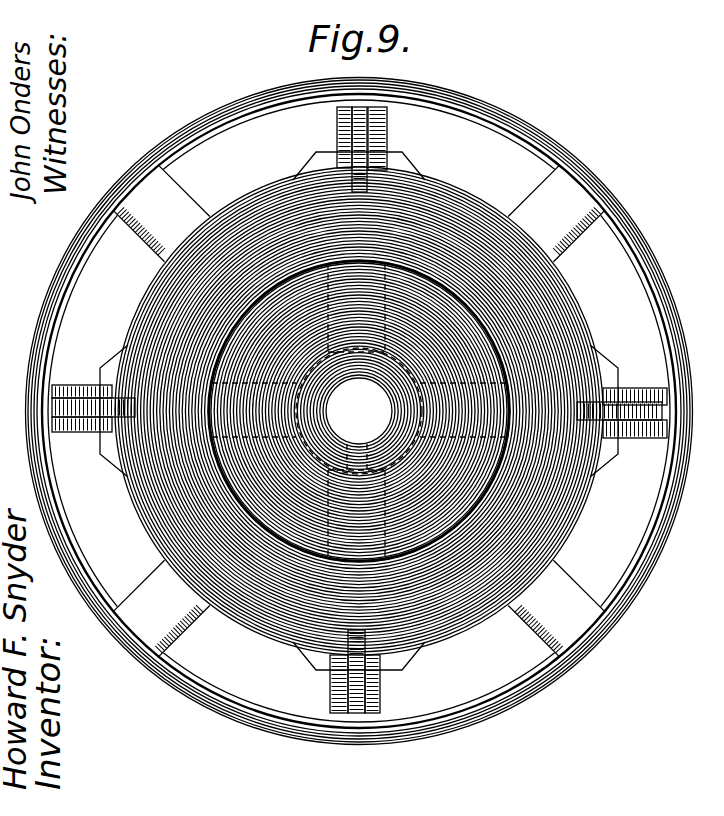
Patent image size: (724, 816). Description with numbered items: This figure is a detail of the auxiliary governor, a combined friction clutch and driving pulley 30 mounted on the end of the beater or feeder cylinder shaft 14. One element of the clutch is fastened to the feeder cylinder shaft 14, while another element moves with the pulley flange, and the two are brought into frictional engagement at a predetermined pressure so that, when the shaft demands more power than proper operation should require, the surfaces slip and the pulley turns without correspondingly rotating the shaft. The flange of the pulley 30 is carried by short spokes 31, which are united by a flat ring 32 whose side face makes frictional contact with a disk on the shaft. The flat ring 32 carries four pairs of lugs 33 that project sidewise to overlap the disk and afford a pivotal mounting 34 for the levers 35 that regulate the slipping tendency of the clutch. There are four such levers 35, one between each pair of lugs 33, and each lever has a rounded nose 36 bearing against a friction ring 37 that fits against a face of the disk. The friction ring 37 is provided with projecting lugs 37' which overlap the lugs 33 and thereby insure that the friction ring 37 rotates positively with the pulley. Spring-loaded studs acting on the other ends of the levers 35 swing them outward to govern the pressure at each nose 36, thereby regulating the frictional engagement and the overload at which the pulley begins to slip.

The feeder cylinder shaft 14 is at (359, 411).
The driving pulley 30 is at (523, 128).
The short spokes 31 is at (570, 243).
The flat ring 32 is at (462, 188).
The lugs 33 is at (330, 688).
The pivotal mounting 34 is at (386, 130).
The levers 35 is at (352, 136).
The rounded nose 36 is at (272, 181).
The friction ring 37 is at (376, 411).
The projecting lugs 37' is at (359, 407).